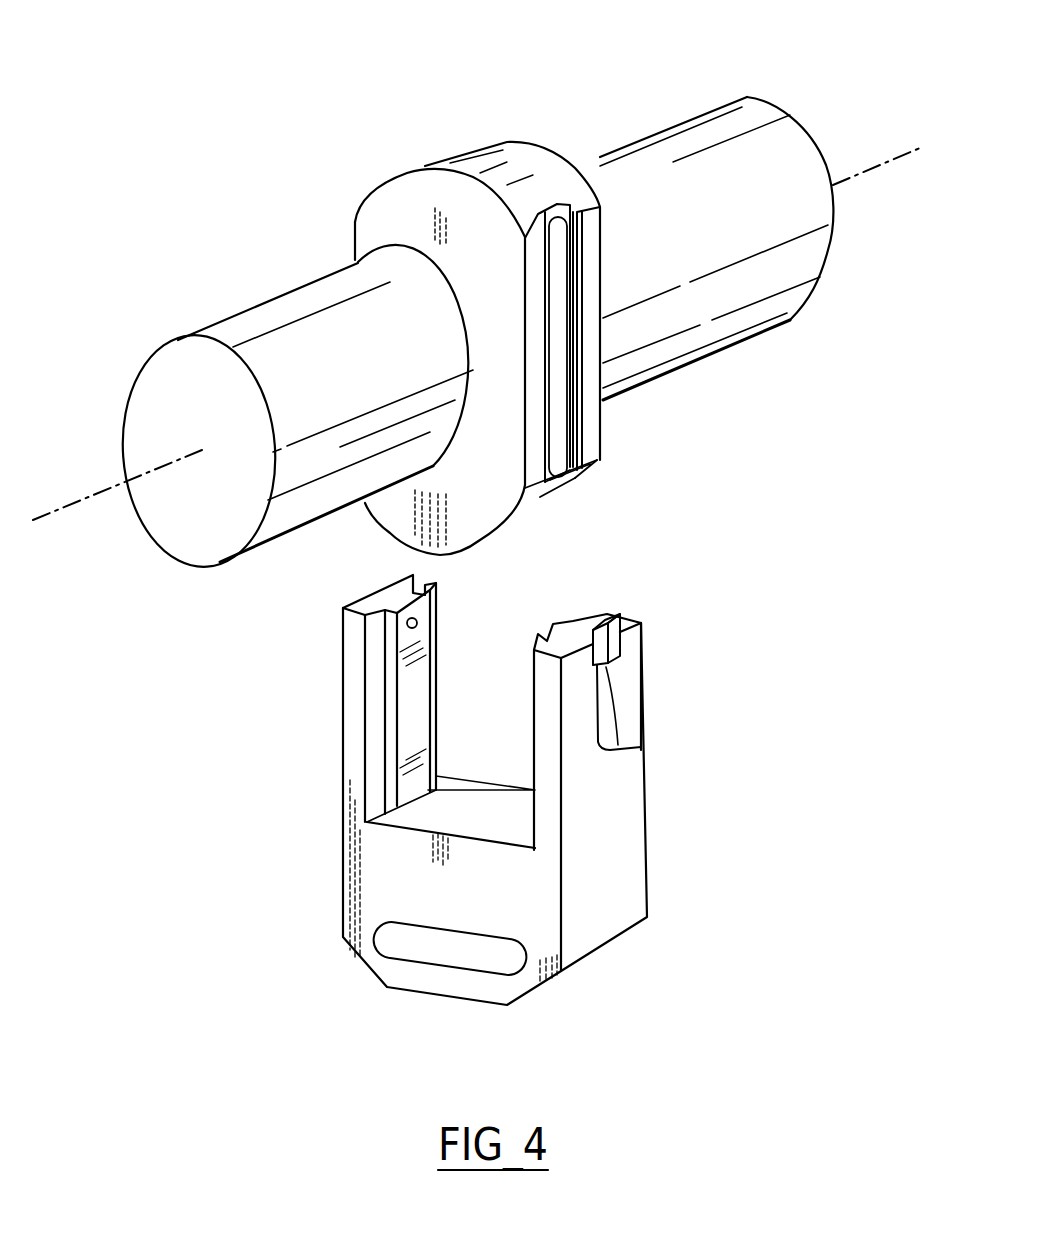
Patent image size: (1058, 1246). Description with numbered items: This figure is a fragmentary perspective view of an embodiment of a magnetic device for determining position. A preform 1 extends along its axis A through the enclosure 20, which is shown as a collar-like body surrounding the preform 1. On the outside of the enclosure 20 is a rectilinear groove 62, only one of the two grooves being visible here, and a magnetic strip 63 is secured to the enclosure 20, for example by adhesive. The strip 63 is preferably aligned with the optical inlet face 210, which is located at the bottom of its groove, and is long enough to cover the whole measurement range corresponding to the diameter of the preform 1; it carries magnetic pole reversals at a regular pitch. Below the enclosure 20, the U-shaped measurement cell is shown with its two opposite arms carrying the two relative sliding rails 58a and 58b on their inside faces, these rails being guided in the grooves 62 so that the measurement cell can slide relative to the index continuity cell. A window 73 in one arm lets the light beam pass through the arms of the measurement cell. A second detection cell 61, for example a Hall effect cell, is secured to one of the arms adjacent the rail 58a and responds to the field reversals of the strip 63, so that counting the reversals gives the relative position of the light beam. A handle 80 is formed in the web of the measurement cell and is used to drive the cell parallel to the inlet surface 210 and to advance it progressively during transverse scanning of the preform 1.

The axis of shaft A is at (60, 512).
The preform 1 is at (217, 535).
The enclosure 20 is at (470, 116).
The groove 62 is at (555, 196).
The magnetic strip 63 is at (602, 237).
The inlet optical surface 210 is at (590, 472).
The sliding rail 58a is at (555, 626).
The sliding rail 58b is at (406, 690).
The second detection cell 61 is at (612, 647).
The window 73 is at (418, 625).
The handle 80 is at (412, 990).